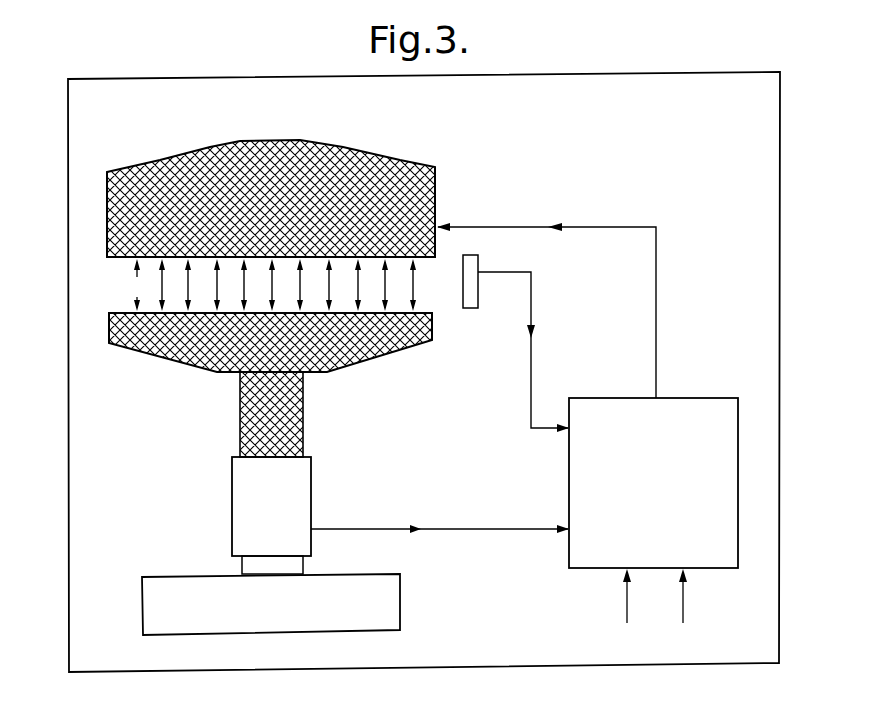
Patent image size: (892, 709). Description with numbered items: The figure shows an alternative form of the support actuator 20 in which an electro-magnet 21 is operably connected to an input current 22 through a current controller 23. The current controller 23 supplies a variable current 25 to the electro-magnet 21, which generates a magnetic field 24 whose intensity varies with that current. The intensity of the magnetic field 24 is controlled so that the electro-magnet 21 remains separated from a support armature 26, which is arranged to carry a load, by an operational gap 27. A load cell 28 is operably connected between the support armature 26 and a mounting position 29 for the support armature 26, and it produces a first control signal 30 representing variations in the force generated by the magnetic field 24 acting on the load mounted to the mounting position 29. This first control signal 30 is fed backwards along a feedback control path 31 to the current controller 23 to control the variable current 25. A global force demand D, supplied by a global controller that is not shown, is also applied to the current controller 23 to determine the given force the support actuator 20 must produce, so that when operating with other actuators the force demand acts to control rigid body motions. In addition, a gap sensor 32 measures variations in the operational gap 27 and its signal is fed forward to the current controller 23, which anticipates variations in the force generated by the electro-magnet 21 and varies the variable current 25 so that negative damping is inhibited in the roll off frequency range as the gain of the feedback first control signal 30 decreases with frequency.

The support actuator 20 is at (786, 354).
The electro-magnet 21 is at (380, 167).
The input current 22 is at (627, 605).
The current controller 23 is at (666, 489).
The magnetic field 24 is at (427, 282).
The variable current 25 is at (559, 225).
The support armature 26 is at (397, 337).
The operational gap 27 is at (150, 297).
The load cell 28 is at (300, 473).
The mounting position 29 is at (393, 591).
The first control signal 30 is at (420, 526).
The feedback control path 31 is at (556, 526).
The gap sensor 32 is at (470, 260).
The global force demand D is at (684, 607).